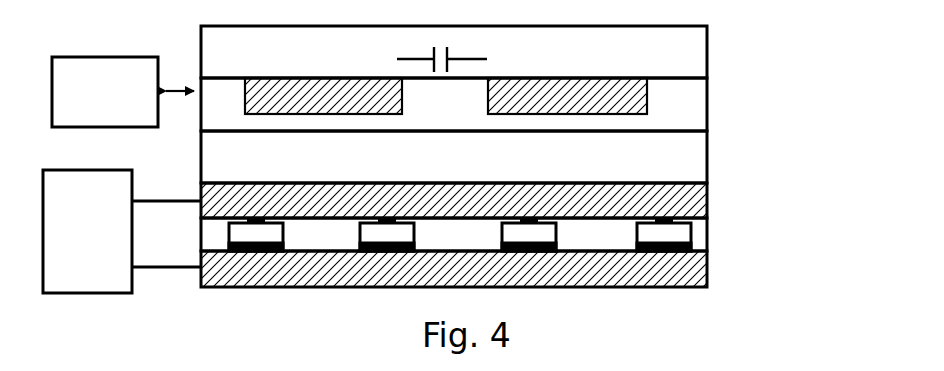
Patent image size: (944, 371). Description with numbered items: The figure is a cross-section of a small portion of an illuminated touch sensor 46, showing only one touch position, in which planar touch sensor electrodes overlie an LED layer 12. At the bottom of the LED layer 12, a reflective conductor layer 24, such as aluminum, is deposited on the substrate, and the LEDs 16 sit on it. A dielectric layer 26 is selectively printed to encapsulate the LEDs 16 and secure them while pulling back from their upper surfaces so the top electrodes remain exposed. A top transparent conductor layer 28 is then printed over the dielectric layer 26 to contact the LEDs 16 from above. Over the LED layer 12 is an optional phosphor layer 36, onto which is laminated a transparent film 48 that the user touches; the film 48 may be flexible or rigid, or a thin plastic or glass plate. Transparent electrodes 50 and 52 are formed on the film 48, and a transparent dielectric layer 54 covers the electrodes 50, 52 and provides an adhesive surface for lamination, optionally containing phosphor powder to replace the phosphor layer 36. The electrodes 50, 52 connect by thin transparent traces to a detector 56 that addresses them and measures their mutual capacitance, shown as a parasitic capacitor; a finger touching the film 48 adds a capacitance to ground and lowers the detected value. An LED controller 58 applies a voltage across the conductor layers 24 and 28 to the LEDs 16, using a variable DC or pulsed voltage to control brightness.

The LED layer 12 is at (531, 157).
The LEDs 16 is at (692, 236).
The reflective conductor layer 24 is at (708, 266).
The dielectric layer 26 is at (493, 230).
The top transparent conductor layer 28 is at (708, 185).
The phosphor layer 36 is at (708, 158).
The illuminated touch sensor 46 is at (531, 91).
The transparent film 48 is at (708, 51).
The transparent electrode 50 is at (336, 78).
The transparent electrode 52 is at (558, 78).
The transparent dielectric layer 54 is at (477, 85).
The detector 56 is at (113, 57).
The LED controller 58 is at (88, 170).